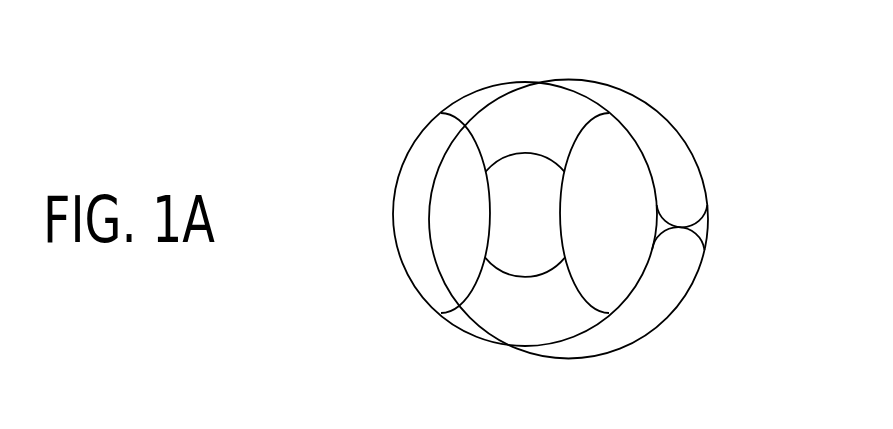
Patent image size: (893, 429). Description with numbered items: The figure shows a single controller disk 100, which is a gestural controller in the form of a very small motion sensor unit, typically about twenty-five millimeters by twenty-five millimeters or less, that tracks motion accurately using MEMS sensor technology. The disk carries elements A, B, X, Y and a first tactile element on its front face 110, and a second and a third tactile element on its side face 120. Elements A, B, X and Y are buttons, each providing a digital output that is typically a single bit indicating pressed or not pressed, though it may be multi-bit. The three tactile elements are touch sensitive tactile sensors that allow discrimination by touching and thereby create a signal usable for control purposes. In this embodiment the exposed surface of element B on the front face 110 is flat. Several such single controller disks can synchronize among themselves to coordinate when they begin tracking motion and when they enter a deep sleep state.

The single controller disk 100 is at (412, 60).
The front face 110 is at (545, 92).
The side face 120 is at (665, 140).